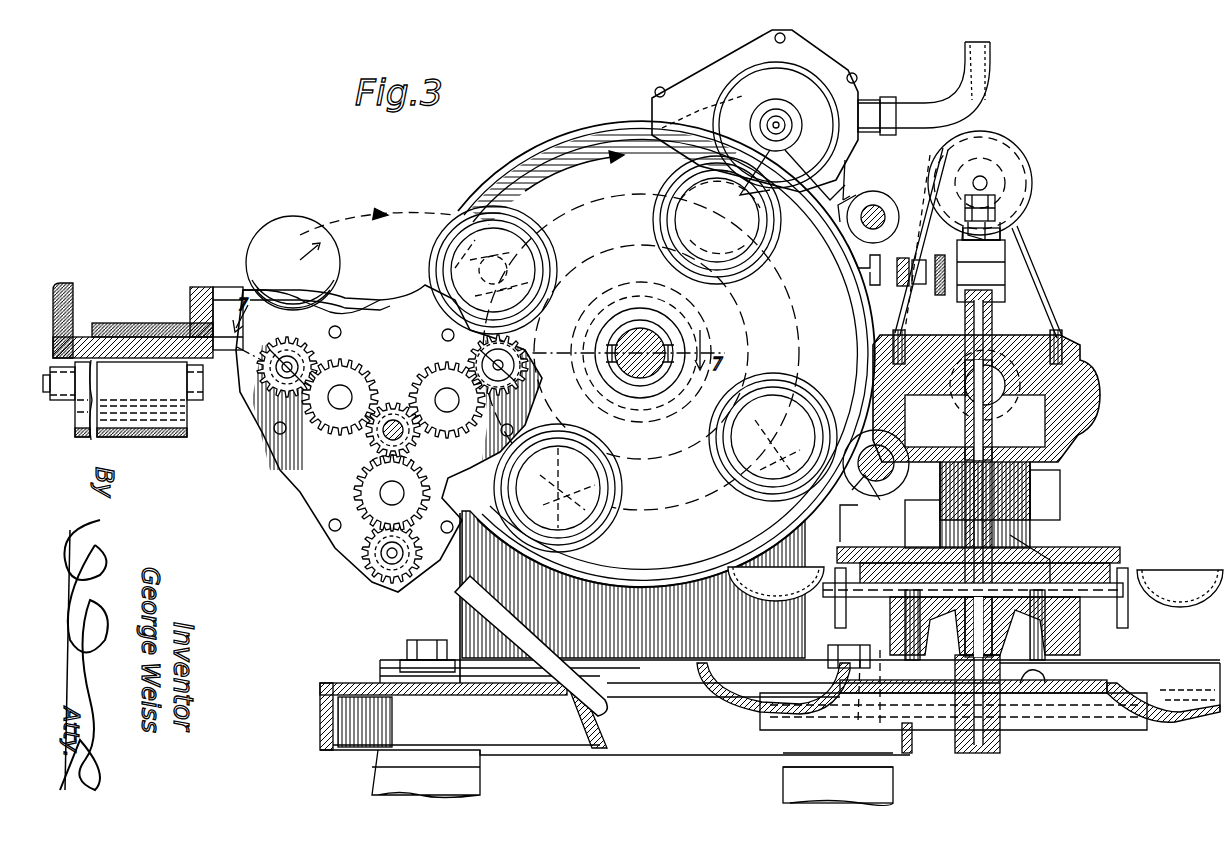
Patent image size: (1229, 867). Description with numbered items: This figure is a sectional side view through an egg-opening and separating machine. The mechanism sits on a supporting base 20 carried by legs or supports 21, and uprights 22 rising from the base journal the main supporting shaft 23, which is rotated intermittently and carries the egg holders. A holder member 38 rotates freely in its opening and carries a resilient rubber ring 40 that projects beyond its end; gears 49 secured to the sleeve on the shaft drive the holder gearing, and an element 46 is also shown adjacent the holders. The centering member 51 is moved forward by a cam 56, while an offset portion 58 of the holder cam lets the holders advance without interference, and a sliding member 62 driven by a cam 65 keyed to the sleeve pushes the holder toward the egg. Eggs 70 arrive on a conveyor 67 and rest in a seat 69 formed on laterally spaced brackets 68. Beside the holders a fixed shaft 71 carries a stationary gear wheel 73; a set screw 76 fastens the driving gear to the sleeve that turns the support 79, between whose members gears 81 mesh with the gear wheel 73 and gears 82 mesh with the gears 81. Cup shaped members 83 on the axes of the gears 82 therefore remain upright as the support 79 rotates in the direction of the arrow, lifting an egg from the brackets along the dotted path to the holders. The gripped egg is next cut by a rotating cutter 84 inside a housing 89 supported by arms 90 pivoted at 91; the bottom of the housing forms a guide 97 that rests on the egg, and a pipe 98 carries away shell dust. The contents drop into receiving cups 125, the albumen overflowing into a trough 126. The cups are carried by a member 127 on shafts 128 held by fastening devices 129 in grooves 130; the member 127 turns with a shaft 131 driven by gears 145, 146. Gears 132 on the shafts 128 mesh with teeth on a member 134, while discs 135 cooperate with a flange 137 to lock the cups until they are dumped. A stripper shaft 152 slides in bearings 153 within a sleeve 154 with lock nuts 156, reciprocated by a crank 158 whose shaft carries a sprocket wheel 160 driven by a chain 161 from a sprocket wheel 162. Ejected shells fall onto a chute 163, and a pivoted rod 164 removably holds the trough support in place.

The supporting base 20 is at (605, 752).
The legs or supports 21 is at (450, 777).
The uprights 22 is at (476, 556).
The main supporting shaft 23 is at (646, 335).
The member 38 is at (700, 178).
The ring 40 is at (765, 405).
The roller 46 is at (730, 208).
The gears 49 is at (568, 478).
The centering member 51 is at (575, 236).
The cam 56 is at (632, 458).
The offset portion 58 is at (453, 228).
The member 62 is at (560, 318).
The cam 65 is at (735, 322).
The conveyor 67 is at (145, 322).
The brackets 68 is at (235, 292).
The seat 69 is at (240, 290).
The eggs 70 is at (525, 248).
The shaft 71 is at (380, 440).
The gear wheel 73 is at (376, 444).
The set screw 76 is at (690, 222).
The support 79 is at (285, 490).
The gears 81 is at (362, 400).
The gears 82 is at (530, 370).
The cup shaped members 83 is at (515, 345).
The rotating cutter 84 is at (808, 72).
The housing 89 is at (700, 85).
The arms 90 is at (878, 190).
The pivot 91 is at (890, 210).
The guide 97 is at (648, 148).
The pipe 98 is at (938, 95).
The receiving cups 125 is at (1165, 556).
The trough shaped member 126 is at (728, 708).
The member 127 is at (1030, 562).
The shafts 128 is at (1068, 632).
The fastening devices 129 is at (800, 690).
The grooves 130 is at (880, 450).
The shaft 131 is at (1000, 495).
The gear 132 is at (1090, 618).
The member 134 is at (905, 548).
The discs 135 is at (1128, 612).
The flange 137 is at (840, 540).
The gear 145 is at (1098, 360).
The gear 146 is at (1060, 418).
The vertically reciprocating shaft 152 is at (990, 190).
The bearings 153 is at (1010, 255).
The sleeve 154 is at (1005, 233).
The lock nuts 156 is at (996, 208).
The crank 158 is at (985, 135).
The sprocket wheel 160 is at (1018, 148).
The endless flexible belt or drive member 161 is at (940, 170).
The sprocket wheel 162 is at (870, 492).
The incline or chute 163 is at (490, 592).
The bar or rod 164 is at (914, 745).